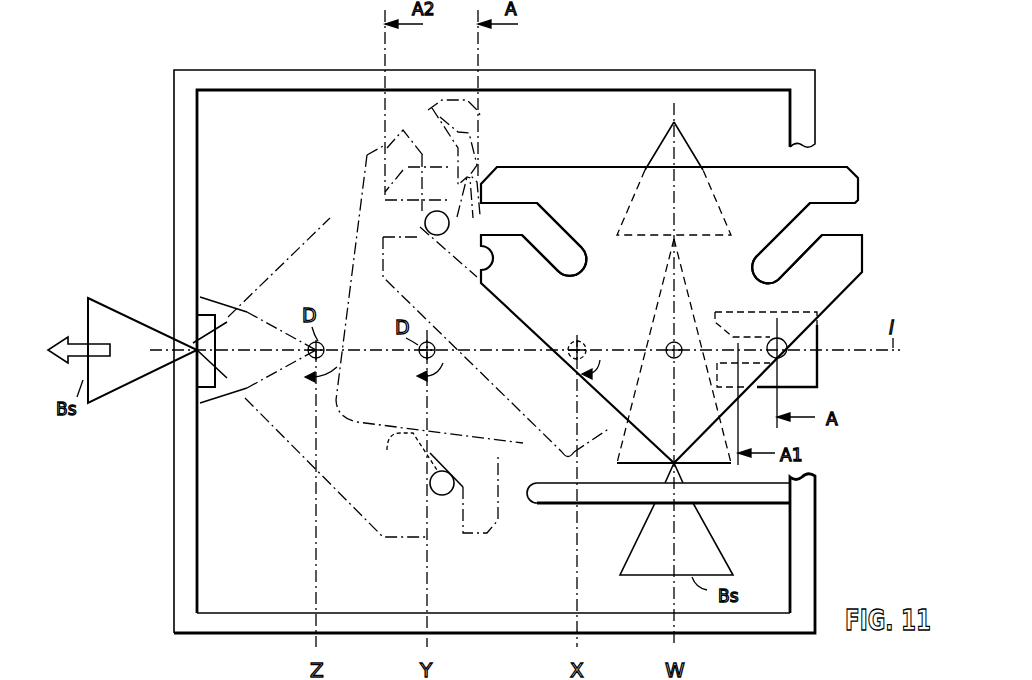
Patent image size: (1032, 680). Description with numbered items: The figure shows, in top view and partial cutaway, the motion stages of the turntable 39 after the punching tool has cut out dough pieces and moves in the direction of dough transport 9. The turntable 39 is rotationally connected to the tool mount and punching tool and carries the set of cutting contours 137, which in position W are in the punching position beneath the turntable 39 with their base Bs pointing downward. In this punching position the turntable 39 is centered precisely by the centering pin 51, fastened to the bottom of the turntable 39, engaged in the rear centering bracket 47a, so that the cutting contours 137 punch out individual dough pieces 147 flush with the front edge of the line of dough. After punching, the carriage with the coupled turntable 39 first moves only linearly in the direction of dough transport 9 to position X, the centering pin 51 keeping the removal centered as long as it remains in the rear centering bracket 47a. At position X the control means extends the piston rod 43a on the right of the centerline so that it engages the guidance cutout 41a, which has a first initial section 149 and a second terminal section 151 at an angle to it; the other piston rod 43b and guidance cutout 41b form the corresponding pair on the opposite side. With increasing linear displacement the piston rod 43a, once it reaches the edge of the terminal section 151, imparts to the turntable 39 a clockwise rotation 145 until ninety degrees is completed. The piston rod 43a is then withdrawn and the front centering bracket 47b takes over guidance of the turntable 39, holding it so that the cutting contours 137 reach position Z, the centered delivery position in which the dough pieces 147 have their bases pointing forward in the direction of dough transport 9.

The direction of dough transport 9 is at (74, 343).
The turntable 39 is at (762, 216).
The guidance cutout 41a is at (566, 253).
The guidance cutout 41b is at (773, 262).
The piston rod 43a is at (426, 214).
The piston rod 43b is at (447, 497).
The rear centering bracket 47a is at (805, 367).
The front centering bracket 47b is at (205, 330).
The centering pin 51 is at (781, 340).
The set of cutting contours 137 is at (692, 150).
The clockwise rotation 145 is at (442, 368).
The dough pieces 147 is at (122, 377).
The first initial section 149 is at (482, 116).
The second terminal section 151 is at (477, 175).